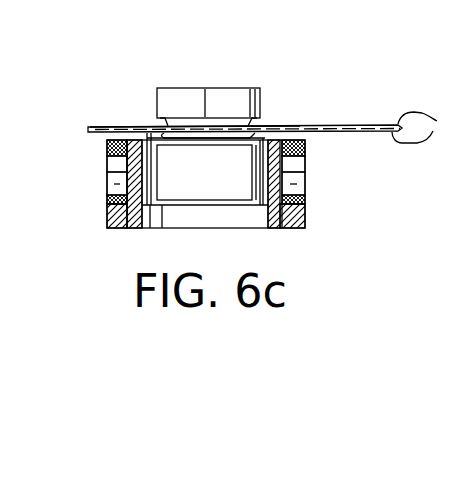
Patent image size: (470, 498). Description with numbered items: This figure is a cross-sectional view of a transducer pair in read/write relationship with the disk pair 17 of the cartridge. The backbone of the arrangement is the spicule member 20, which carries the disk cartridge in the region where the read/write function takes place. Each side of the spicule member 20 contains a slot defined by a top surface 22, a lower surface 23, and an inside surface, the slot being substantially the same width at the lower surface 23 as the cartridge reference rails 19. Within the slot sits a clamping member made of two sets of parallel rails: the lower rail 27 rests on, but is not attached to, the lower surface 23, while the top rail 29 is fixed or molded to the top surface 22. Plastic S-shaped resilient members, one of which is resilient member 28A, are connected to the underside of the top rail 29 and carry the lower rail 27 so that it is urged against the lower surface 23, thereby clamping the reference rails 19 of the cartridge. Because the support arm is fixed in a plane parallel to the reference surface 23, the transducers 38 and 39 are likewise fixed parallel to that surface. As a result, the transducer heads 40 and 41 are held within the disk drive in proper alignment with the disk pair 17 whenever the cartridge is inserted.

The disk pair 17 is at (273, 126).
The reference rails 19 is at (105, 157).
The spicule member 20 is at (229, 218).
The top surface 22 is at (104, 206).
The lower surface 23 is at (105, 143).
The lower rail 27 is at (105, 179).
The resilient member 28A is at (105, 198).
The top rail 29 is at (105, 203).
The transducer 38 is at (198, 98).
The transducer 39 is at (200, 200).
The transducer head 40 is at (253, 126).
The transducer head 41 is at (147, 124).